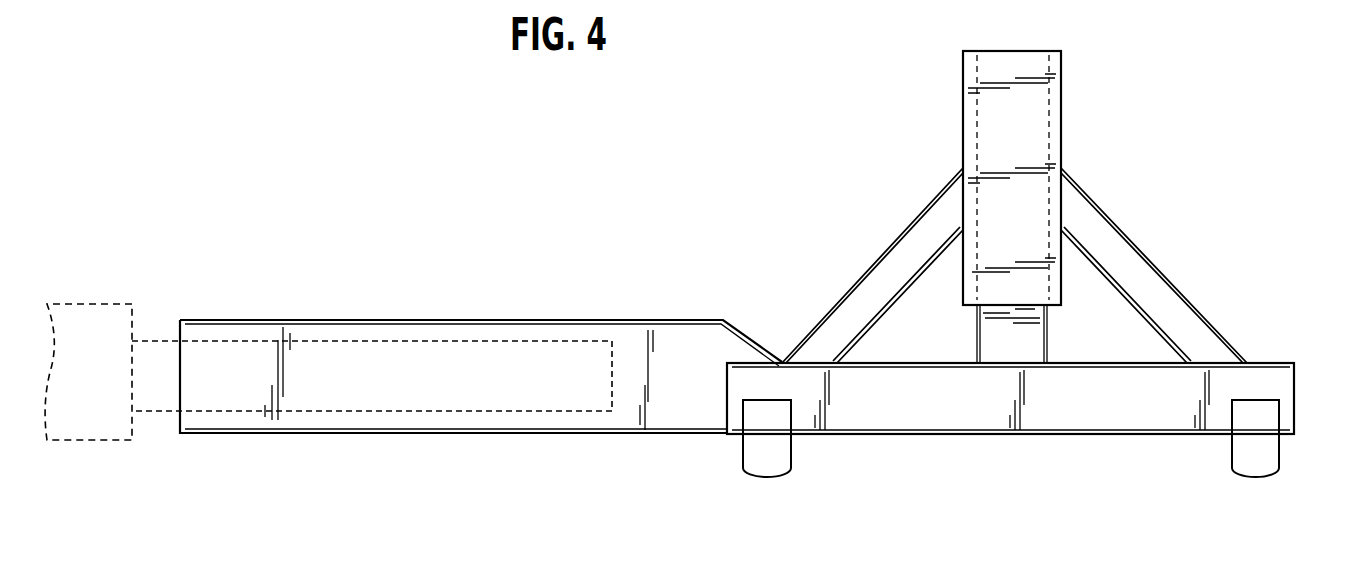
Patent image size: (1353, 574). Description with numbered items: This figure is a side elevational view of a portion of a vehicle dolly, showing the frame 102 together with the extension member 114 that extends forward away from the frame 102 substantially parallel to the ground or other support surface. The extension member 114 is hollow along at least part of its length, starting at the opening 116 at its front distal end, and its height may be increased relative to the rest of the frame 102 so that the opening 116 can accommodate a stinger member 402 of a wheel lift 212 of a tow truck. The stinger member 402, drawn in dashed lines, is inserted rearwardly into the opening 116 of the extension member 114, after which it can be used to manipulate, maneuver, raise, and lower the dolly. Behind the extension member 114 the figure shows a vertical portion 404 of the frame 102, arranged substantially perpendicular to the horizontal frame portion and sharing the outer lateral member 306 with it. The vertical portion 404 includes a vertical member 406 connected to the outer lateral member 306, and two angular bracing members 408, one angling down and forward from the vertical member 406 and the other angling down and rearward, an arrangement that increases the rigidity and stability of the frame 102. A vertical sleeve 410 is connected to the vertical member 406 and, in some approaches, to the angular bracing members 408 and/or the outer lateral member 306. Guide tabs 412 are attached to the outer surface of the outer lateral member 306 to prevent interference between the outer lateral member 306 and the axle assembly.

The frame 102 is at (1017, 272).
The extension member 114 is at (428, 423).
The opening 116 is at (434, 405).
The wheel lift 212 is at (92, 302).
The outer lateral member 306 is at (1283, 388).
The stinger member 402 is at (503, 413).
The vertical portion 404 is at (1014, 257).
The vertical member 406 is at (992, 345).
The angular bracing member 408 is at (880, 275).
The vertical sleeve 410 is at (963, 88).
The guide tabs 412 is at (755, 455).